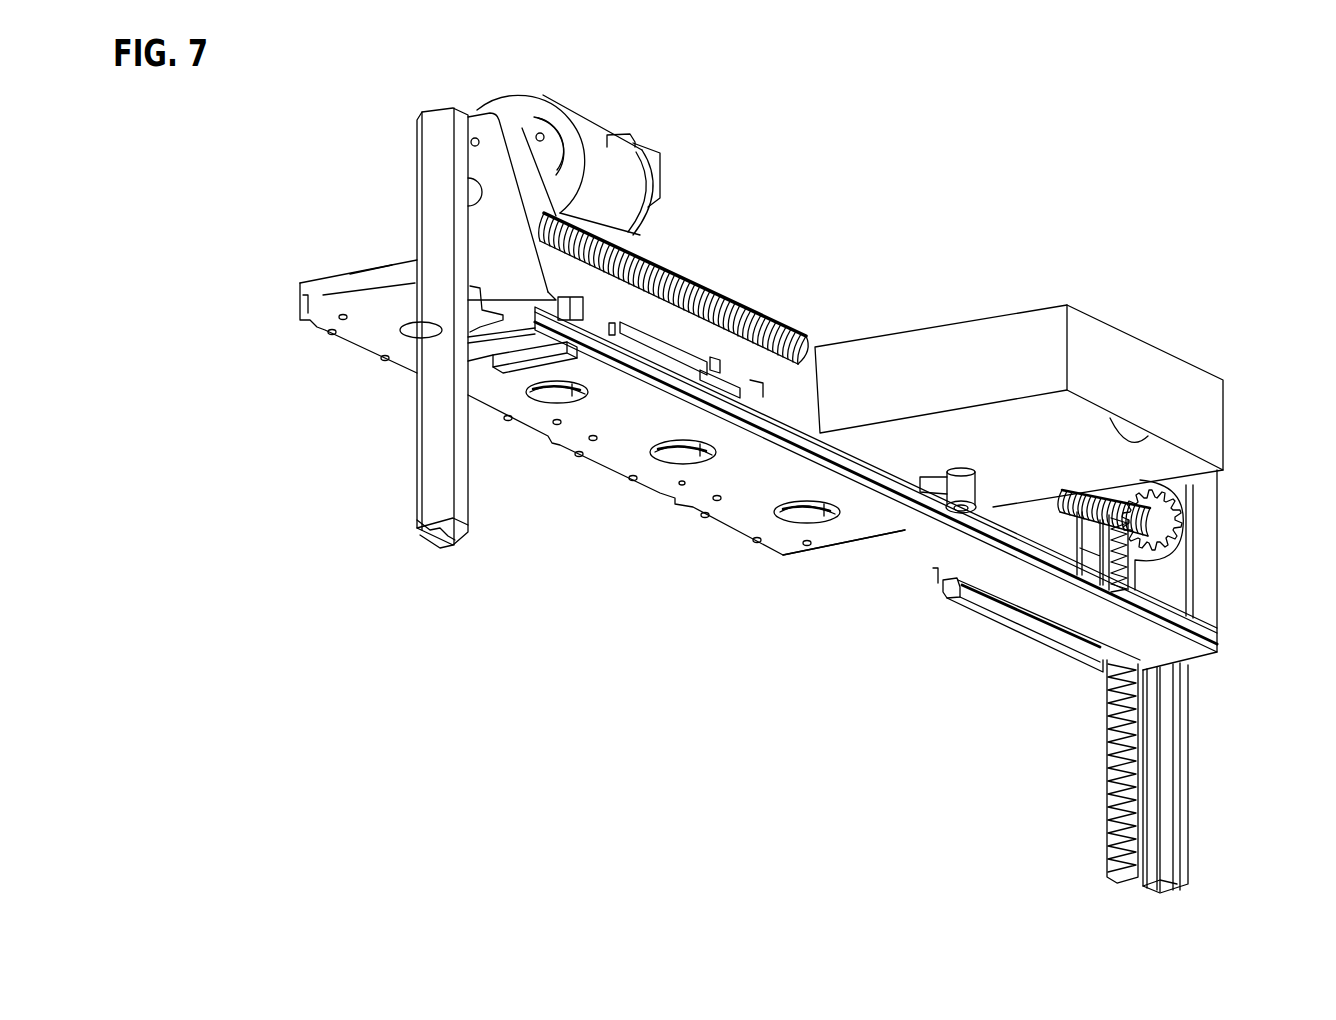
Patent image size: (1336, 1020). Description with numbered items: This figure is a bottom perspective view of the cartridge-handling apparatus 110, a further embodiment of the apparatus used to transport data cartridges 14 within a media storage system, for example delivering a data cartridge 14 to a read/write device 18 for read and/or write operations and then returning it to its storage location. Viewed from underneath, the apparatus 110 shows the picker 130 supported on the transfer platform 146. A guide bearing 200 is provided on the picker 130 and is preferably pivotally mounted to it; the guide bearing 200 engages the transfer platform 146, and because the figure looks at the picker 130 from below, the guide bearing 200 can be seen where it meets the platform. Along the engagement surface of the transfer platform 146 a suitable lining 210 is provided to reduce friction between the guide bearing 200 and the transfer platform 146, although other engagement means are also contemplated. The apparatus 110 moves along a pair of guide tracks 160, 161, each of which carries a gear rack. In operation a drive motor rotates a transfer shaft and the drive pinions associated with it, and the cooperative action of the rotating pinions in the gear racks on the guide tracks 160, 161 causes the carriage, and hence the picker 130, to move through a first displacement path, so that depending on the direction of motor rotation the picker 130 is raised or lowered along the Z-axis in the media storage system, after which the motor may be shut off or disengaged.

The cartridge-handling apparatus 110 is at (862, 193).
The guide track 160 is at (418, 407).
The data cartridge 14 is at (610, 467).
The lining 210 is at (1222, 644).
The picker 130 is at (1147, 437).
The guide bearing 200 is at (980, 500).
The transfer platform 146 is at (895, 548).
The read/write device 18 is at (1014, 637).
The guide track 161 is at (1192, 848).